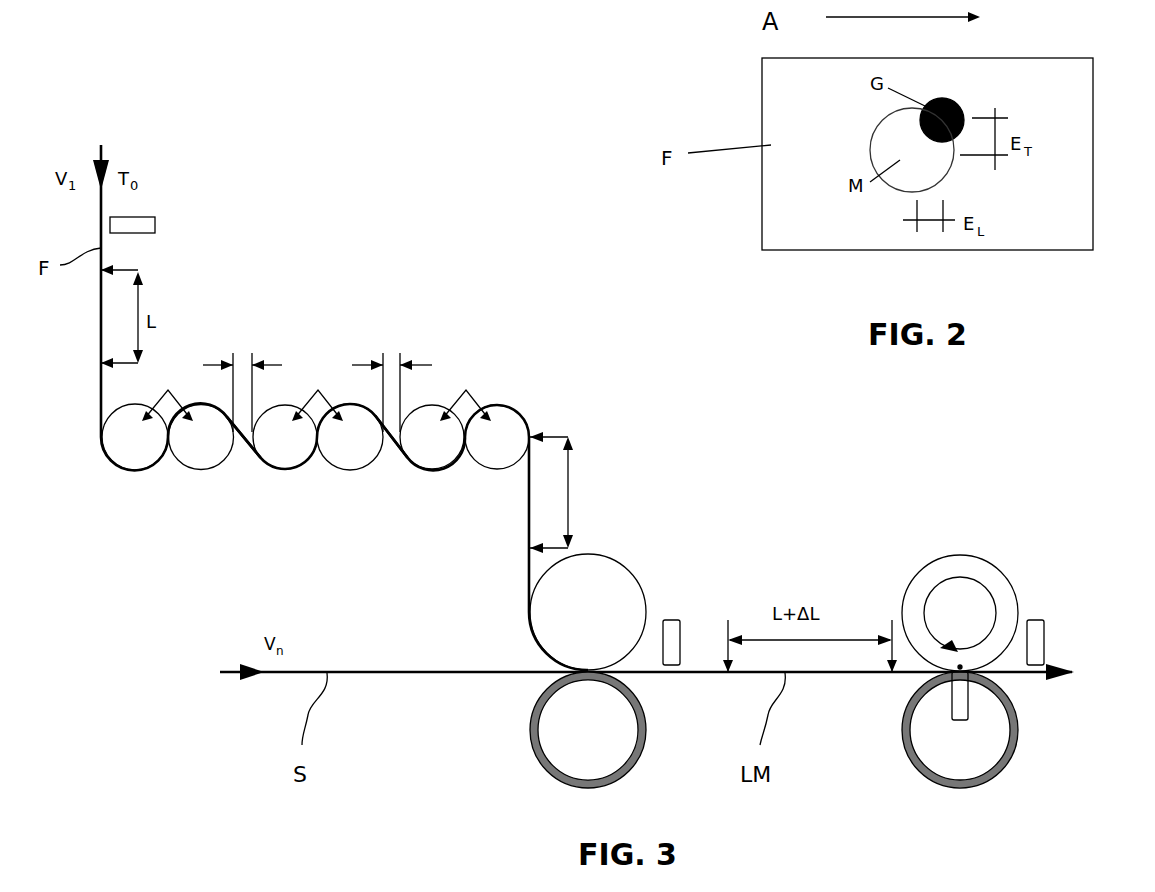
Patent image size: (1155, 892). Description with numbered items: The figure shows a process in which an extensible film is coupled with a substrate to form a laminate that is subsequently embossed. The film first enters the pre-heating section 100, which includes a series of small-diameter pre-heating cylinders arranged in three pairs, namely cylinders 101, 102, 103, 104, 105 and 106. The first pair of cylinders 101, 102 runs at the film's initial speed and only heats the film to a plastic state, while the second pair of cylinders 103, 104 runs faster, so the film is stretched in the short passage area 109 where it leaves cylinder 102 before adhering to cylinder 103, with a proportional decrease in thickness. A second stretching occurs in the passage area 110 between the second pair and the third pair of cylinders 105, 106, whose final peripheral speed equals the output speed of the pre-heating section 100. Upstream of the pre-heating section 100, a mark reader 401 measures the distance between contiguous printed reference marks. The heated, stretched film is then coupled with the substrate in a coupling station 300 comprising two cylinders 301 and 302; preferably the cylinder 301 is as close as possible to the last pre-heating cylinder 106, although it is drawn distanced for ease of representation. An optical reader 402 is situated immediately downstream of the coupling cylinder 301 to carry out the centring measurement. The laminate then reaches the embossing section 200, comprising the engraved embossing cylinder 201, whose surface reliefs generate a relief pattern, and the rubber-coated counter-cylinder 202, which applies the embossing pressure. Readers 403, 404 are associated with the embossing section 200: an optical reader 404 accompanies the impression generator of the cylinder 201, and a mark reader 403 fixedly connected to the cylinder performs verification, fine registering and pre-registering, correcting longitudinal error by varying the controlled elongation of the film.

The pre-heating section 100 is at (486, 310).
The pre-heating cylinder 101 is at (130, 460).
The pre-heating cylinder 102 is at (180, 460).
The pre-heating cylinder 103 is at (278, 458).
The pre-heating cylinder 104 is at (340, 458).
The pre-heating cylinder 105 is at (437, 455).
The pre-heating cylinder 106 is at (510, 418).
The passage area 109 is at (255, 463).
The passage area 110 is at (394, 456).
The embossing section 200 is at (1046, 522).
The engraved embossing cylinder 201 is at (988, 570).
The counter-cylinder 202 is at (962, 765).
The coupling station 300 is at (505, 720).
The coupling cylinder 301 is at (625, 585).
The coupling cylinder 302 is at (546, 759).
The mark reader 401 is at (138, 235).
The optical reader 402 is at (671, 618).
The mark reader 403 is at (968, 720).
The optical reader 404 is at (1046, 620).